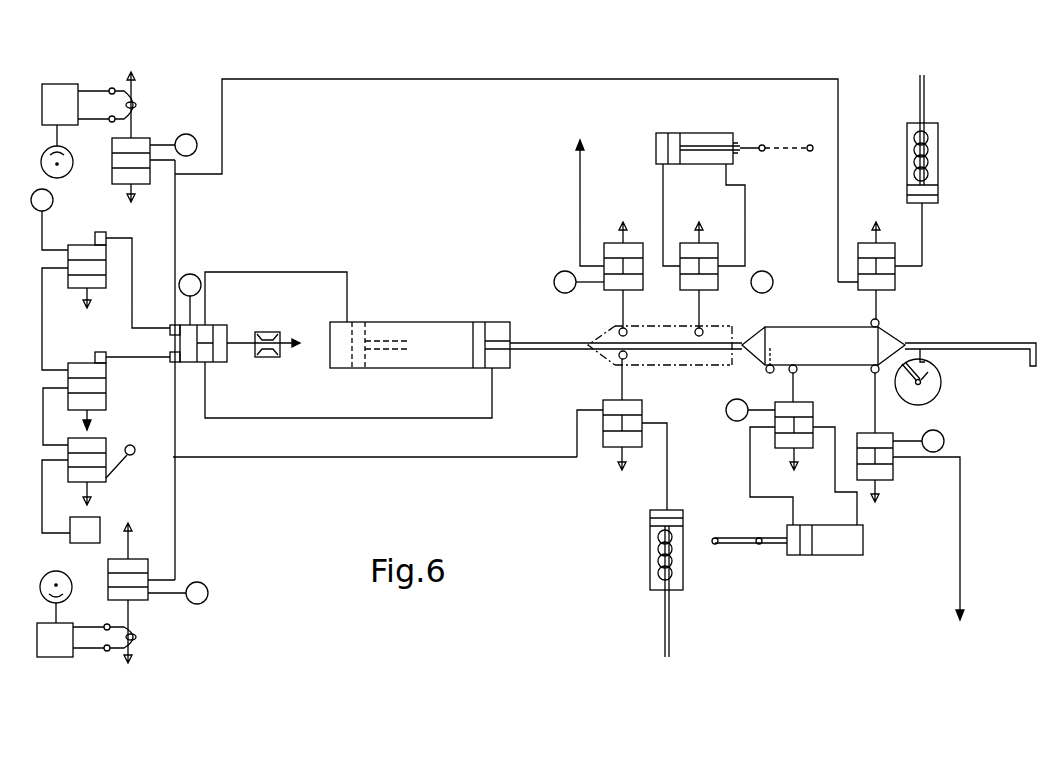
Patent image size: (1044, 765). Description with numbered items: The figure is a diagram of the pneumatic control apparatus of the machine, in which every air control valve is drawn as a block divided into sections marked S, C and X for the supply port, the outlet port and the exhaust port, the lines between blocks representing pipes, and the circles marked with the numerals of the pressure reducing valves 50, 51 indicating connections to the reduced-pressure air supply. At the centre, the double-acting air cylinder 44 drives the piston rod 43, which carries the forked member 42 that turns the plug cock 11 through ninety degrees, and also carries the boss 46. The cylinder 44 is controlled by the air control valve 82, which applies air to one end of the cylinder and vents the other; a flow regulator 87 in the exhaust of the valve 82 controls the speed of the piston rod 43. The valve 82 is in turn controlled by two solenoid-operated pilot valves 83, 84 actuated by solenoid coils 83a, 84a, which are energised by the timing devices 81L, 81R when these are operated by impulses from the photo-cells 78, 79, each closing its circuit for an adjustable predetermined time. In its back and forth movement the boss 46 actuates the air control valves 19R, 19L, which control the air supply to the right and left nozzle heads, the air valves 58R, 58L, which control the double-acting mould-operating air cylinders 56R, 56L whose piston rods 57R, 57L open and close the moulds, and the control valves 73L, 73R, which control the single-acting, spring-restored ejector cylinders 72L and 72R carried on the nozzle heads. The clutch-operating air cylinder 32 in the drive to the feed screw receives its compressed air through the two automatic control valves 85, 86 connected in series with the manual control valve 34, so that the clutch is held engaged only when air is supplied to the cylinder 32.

The plug cock 11 is at (937, 398).
The air control valve 19L is at (893, 480).
The air control valve 19R is at (637, 243).
The air cylinder 32 is at (100, 520).
The manual control valve 34 is at (102, 438).
The forked member 42 is at (987, 343).
The piston rod 43 is at (550, 342).
The double-acting air cylinder 44 is at (469, 313).
The boss 46 is at (787, 326).
The pressure reducing valve 50 is at (749, 361).
The pressure reducing valve 51 is at (402, 369).
The double-acting air cylinder 56L is at (843, 557).
The double-acting air cylinder 56R is at (715, 128).
The piston rod 57L is at (743, 545).
The piston rod 57R is at (753, 153).
The air valve 58L is at (813, 403).
The air valve 58R is at (718, 243).
The ejector air cylinder 72L is at (683, 590).
The ejector air cylinder 72R is at (940, 177).
The control valve 73L is at (643, 408).
The control valve 73R is at (892, 240).
The photo-cell 78 is at (42, 160).
The photo-cell 79 is at (52, 591).
The timing device 81L is at (58, 88).
The timing device 81R is at (58, 651).
The air control valve 82 is at (210, 324).
The solenoid-operated pilot valve 83 is at (148, 138).
The solenoid coil 83a is at (138, 92).
The solenoid-operated pilot valve 84 is at (148, 561).
The solenoid coil 84a is at (140, 631).
The automatic control valve 85 is at (102, 292).
The automatic control valve 86 is at (107, 405).
The flow regulator 87 is at (276, 333).